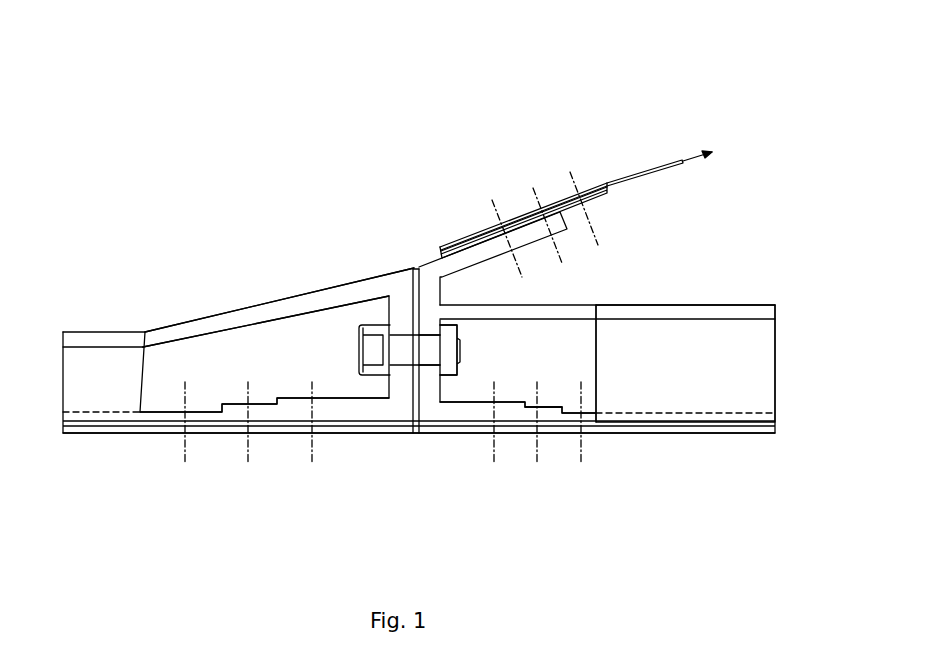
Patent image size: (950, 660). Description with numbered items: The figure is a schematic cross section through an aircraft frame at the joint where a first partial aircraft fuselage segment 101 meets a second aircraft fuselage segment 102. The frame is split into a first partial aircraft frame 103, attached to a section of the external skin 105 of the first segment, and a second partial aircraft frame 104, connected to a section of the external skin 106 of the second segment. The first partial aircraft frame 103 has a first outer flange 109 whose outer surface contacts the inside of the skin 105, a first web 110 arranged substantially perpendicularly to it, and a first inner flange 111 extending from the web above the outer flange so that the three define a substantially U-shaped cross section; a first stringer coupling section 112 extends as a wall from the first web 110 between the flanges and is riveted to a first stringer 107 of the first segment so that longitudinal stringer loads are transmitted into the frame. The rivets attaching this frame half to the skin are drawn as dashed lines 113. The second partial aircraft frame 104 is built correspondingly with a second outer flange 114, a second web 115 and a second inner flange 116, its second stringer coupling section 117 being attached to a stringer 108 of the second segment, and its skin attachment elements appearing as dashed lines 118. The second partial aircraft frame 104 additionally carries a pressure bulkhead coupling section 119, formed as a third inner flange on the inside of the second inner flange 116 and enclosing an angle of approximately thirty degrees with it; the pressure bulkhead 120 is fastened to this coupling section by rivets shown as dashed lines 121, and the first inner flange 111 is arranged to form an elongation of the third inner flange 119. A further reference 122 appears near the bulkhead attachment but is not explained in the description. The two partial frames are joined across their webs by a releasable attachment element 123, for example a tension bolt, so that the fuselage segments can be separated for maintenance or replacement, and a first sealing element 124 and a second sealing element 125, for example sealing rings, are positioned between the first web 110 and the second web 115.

The first partial aircraft fuselage segment 101 is at (185, 138).
The second aircraft fuselage segment 102 is at (650, 92).
The first partial aircraft frame 103 is at (205, 360).
The second partial aircraft frame 104 is at (563, 356).
The external skin 105 is at (112, 427).
The external skin 106 is at (712, 430).
The first stringer 107 is at (103, 363).
The stringer 108 is at (722, 337).
The first outer flange 109 is at (282, 408).
The first web 110 is at (402, 375).
The first inner flange 111 is at (250, 310).
The first stringer coupling section 112 is at (305, 340).
The attachment elements 113 is at (185, 435).
The second outer flange 114 is at (510, 412).
The second web 115 is at (440, 378).
The second inner flange 116 is at (572, 312).
The second stringer coupling section 117 is at (560, 395).
The attachment elements 118 is at (503, 442).
The pressure bulkhead coupling section 119 is at (465, 255).
The pressure bulkhead 120 is at (613, 188).
The rivets 121 is at (505, 217).
The middle strip 122 is at (547, 203).
The attachment element 123 is at (412, 347).
The first sealing element 124 is at (421, 290).
The second sealing element 125 is at (430, 377).